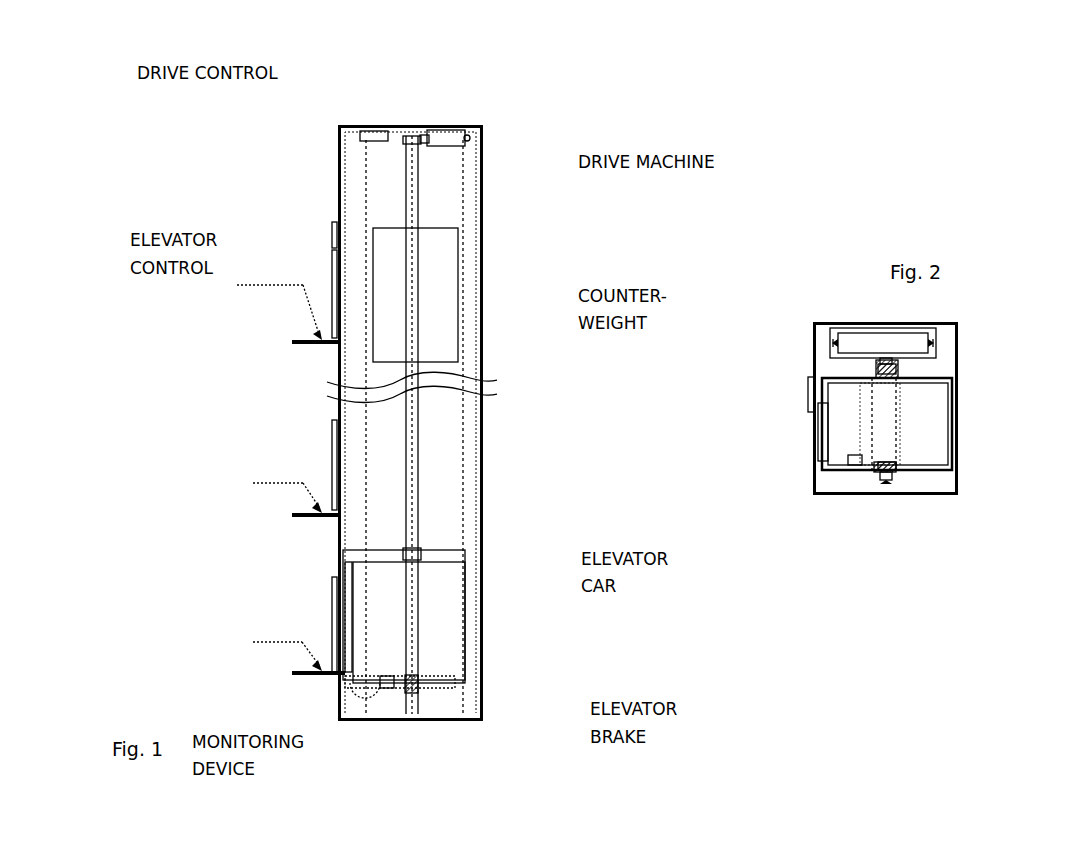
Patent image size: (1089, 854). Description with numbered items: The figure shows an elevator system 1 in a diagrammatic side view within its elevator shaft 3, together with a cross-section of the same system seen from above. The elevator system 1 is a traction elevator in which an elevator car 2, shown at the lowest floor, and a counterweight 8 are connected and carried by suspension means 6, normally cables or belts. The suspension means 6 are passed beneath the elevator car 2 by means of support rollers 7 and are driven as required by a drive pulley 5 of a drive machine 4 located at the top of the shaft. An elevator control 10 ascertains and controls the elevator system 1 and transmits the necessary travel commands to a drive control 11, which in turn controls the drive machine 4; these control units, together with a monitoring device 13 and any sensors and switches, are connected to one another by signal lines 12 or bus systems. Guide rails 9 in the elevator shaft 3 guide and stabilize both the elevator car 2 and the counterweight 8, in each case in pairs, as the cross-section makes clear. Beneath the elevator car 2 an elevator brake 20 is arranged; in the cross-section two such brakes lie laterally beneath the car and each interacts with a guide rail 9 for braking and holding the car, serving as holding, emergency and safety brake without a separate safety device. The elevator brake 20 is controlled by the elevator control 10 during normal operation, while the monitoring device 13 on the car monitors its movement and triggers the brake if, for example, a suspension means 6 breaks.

In FIG. 1, the elevator system 1 is at (258, 537).
In FIG. 1, the elevator car 2 is at (466, 617).
In FIG. 2, the elevator car 2 is at (912, 431).
In FIG. 1, the elevator shaft 3 is at (355, 168).
In FIG. 1, the drive machine 4 is at (470, 139).
In FIG. 1, the drive pulley 5 is at (430, 148).
In FIG. 1, the suspension means 6 is at (414, 454).
In FIG. 2, the suspension means 6 is at (898, 392).
In FIG. 1, the support rollers 7 is at (418, 676).
In FIG. 2, the support rollers 7 is at (822, 398).
In FIG. 1, the counterweight 8 is at (458, 285).
In FIG. 2, the counterweight 8 is at (885, 351).
In FIG. 1, the guide rails 9 is at (372, 372).
In FIG. 2, the guide rails 9 is at (938, 332).
In FIG. 1, the elevator control 10 is at (332, 234).
In FIG. 1, the drive control 11 is at (360, 134).
In FIG. 1, the signal lines 12 is at (338, 193).
In FIG. 1, the monitoring device 13 is at (345, 676).
In FIG. 2, the monitoring device 13 is at (848, 460).
In FIG. 1, the elevator brake 20 is at (395, 686).
In FIG. 2, the elevator brake 20 is at (874, 370).